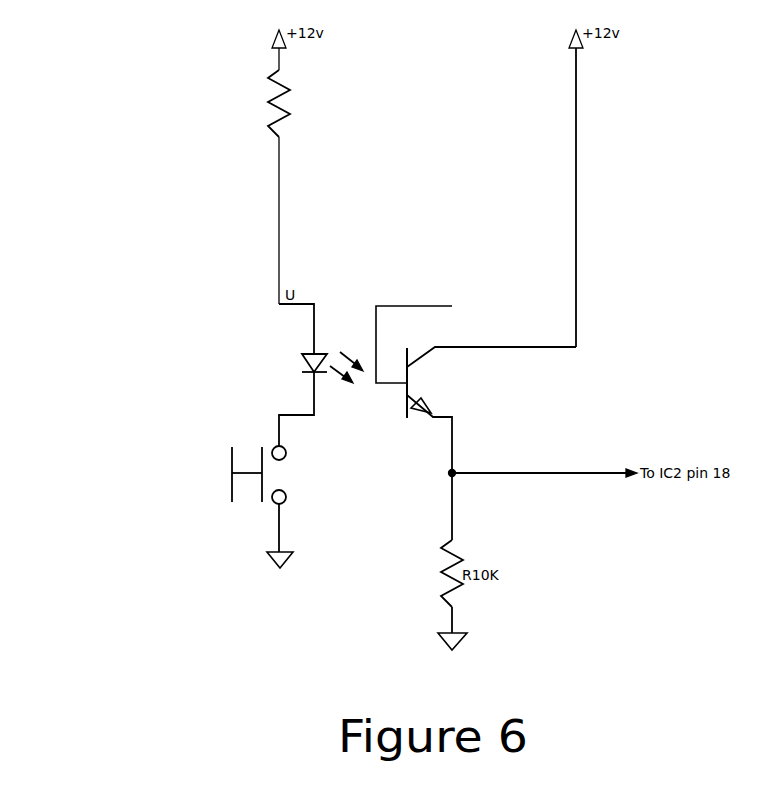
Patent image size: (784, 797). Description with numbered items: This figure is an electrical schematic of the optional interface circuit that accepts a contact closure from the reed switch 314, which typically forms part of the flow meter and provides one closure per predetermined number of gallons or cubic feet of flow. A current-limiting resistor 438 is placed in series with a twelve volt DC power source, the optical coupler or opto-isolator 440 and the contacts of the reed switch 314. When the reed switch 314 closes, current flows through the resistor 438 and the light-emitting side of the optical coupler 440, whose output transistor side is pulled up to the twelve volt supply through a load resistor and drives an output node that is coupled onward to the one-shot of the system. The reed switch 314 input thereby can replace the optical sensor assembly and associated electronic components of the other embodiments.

The current-limiting resistor 438 is at (270, 107).
The optical coupler 440 is at (350, 278).
The reed switch 314 is at (230, 460).